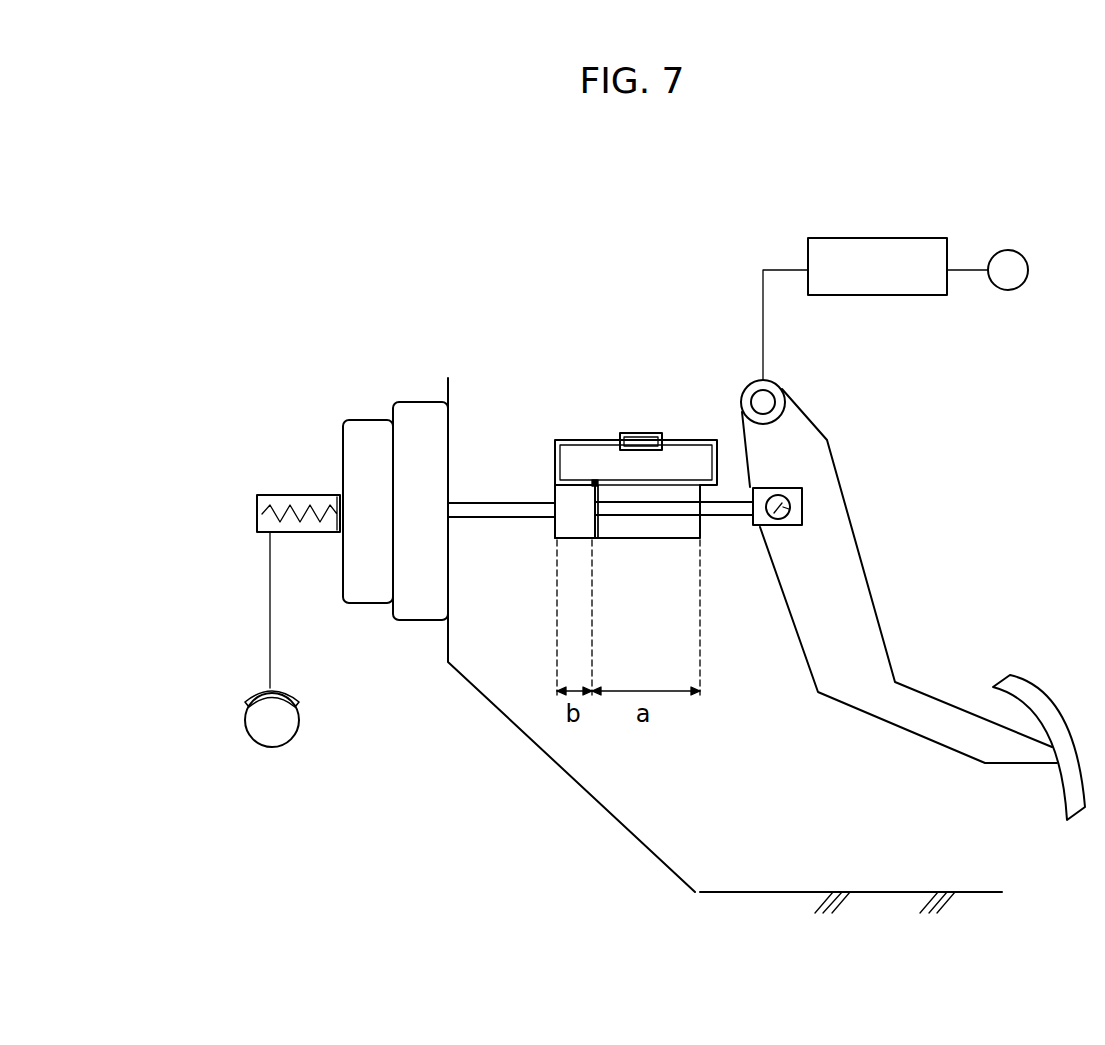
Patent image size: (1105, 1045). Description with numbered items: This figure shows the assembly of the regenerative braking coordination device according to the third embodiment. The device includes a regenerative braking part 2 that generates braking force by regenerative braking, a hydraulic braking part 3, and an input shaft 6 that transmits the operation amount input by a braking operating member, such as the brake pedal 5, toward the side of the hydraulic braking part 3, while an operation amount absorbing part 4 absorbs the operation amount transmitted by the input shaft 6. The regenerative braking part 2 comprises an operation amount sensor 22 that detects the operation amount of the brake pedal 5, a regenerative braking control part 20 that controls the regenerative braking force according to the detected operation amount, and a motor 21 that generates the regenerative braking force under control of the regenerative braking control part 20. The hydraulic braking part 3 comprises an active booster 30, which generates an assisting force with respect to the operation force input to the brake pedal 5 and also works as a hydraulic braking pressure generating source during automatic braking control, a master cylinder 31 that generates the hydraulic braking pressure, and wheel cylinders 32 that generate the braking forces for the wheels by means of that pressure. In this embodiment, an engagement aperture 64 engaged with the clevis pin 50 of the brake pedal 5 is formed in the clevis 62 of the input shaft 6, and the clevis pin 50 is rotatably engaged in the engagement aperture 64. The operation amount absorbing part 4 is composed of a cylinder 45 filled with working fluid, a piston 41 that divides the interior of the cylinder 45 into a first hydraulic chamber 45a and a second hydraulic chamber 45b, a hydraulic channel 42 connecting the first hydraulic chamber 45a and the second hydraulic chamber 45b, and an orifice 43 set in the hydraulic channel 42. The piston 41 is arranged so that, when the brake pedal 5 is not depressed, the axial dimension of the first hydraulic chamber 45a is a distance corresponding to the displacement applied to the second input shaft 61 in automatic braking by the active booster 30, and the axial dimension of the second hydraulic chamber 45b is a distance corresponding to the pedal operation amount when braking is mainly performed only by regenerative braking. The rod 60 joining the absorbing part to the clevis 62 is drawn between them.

The regenerative braking part 2 is at (900, 257).
The hydraulic braking part 3 is at (248, 608).
The operation amount absorbing part 4 is at (593, 446).
The brake pedal 5 is at (830, 447).
The input shaft 6 is at (824, 524).
The regenerative braking control part 20 is at (873, 238).
The motor 21 is at (1012, 250).
The operation amount sensor 22 is at (775, 398).
The active booster 30 is at (423, 400).
The master cylinder 31 is at (275, 493).
The wheel cylinders 32 is at (266, 750).
The piston 41 is at (600, 540).
The hydraulic channel 42 is at (609, 438).
The orifice 43 is at (660, 433).
The cylinder 45 is at (585, 542).
The first hydraulic chamber 45a is at (676, 526).
The second hydraulic chamber 45b is at (568, 538).
The clevis pin 50 is at (765, 526).
The push rod 60 is at (726, 503).
The second input shaft 61 is at (522, 500).
The clevis 62 is at (803, 508).
The engagement aperture 64 is at (788, 517).